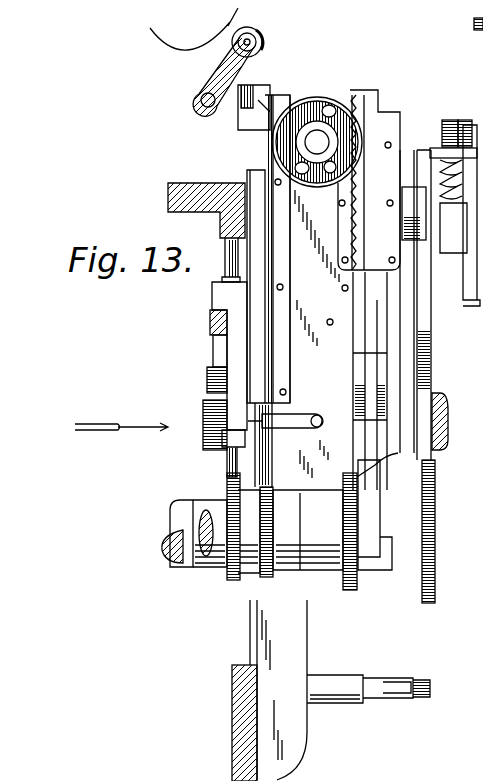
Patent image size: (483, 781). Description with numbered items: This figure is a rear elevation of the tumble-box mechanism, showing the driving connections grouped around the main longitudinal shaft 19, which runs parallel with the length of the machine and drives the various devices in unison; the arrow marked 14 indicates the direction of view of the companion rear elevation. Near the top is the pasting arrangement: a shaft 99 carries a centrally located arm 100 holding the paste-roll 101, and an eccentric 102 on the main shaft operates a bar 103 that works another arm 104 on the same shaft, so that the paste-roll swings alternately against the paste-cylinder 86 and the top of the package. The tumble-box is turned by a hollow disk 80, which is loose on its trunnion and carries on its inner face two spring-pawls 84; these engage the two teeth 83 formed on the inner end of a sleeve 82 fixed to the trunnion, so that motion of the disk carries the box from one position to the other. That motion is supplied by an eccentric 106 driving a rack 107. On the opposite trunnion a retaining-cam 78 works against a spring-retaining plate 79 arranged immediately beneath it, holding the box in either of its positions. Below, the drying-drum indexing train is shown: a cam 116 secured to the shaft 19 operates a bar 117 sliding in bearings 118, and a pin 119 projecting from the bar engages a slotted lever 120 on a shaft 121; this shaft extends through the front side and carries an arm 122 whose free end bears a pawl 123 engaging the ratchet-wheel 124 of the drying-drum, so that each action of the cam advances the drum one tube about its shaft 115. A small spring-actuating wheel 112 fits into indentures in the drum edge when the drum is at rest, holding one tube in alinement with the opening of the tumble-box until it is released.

The paste-cylinder 86 is at (194, 29).
The paste-roll 101 is at (267, 32).
The arm 100 is at (213, 70).
The arm 104 is at (240, 78).
The shaft 99 is at (203, 107).
The spring-pawls 84 is at (322, 103).
The teeth 83 is at (322, 180).
The sleeve 82 is at (303, 141).
The rack 107 is at (370, 93).
The hollow disk 80 is at (363, 177).
The retaining-cam 78 is at (450, 119).
The spring-retaining plate 79 is at (433, 150).
The pawl 123 is at (417, 195).
The arm 122 is at (407, 277).
The ratchet-wheel 124 is at (435, 558).
The shaft 115 is at (448, 430).
The bearings 118 is at (212, 297).
The slotted lever 120 is at (213, 340).
The shaft 121 is at (211, 352).
The pin 119 is at (208, 367).
The bar 117 is at (228, 468).
The bar 103 is at (272, 443).
The short shaft 14 is at (121, 437).
The main longitudinal shaft 19 is at (180, 566).
The cam 116 is at (237, 583).
The eccentric 102 is at (265, 580).
The eccentric 106 is at (355, 590).
The spring-actuating wheel 112 is at (382, 699).